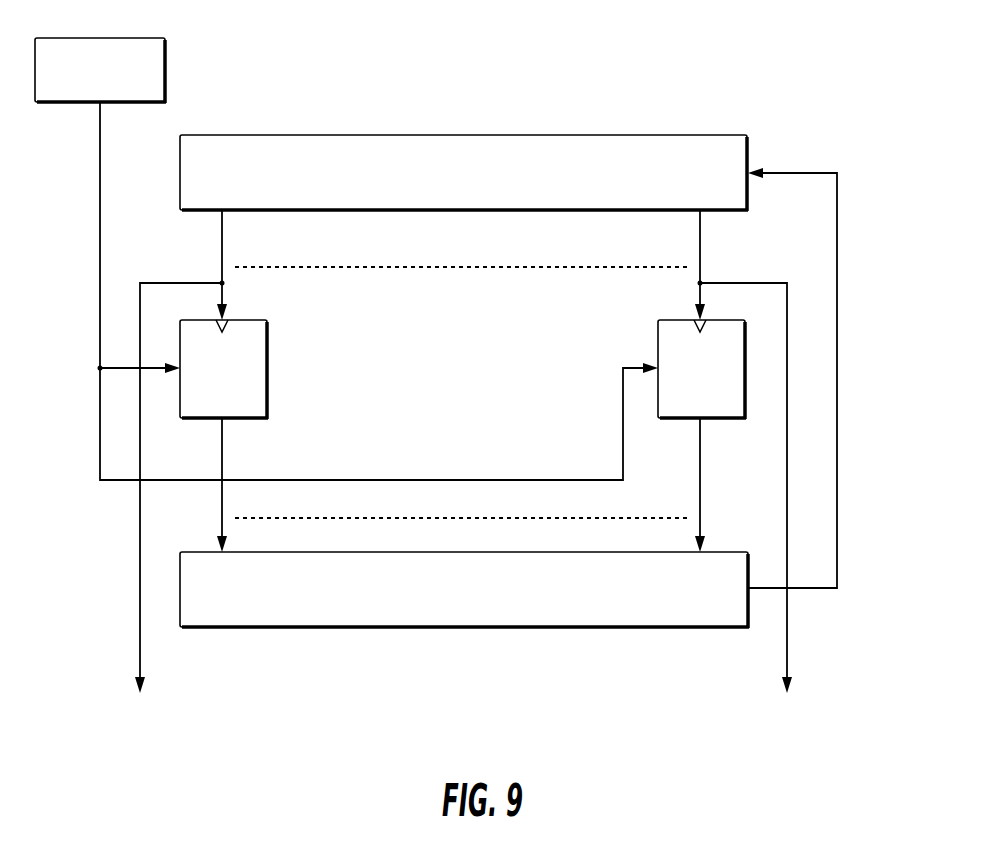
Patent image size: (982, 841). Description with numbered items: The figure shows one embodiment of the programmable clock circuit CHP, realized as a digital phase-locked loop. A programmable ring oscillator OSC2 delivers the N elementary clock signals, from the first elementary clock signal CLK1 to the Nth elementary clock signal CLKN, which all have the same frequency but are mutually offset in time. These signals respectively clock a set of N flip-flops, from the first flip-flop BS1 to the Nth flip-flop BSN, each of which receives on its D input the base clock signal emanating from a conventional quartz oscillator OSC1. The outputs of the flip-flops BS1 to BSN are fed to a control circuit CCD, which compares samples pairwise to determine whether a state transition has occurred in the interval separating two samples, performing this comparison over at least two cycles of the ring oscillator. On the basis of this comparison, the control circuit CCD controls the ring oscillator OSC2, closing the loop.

The programmable clock circuit CHP is at (781, 110).
The quartz oscillator OSC1 is at (346, 259).
The programmable ring oscillator OSC2 is at (464, 173).
The first elementary clock signal CLK1 is at (222, 237).
The Nth elementary clock signal CLKN is at (700, 237).
The first flip-flop BS1 is at (268, 365).
The Nth flip-flop BSN is at (657, 343).
The control circuit CCD is at (508, 398).